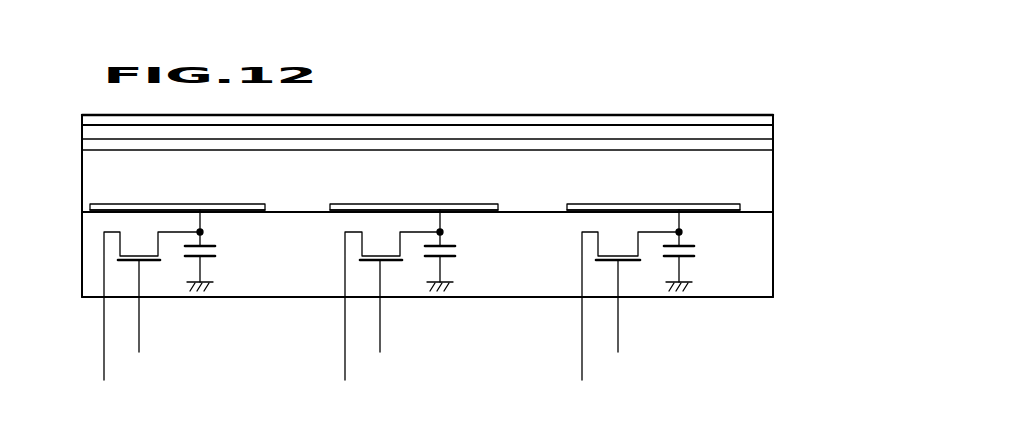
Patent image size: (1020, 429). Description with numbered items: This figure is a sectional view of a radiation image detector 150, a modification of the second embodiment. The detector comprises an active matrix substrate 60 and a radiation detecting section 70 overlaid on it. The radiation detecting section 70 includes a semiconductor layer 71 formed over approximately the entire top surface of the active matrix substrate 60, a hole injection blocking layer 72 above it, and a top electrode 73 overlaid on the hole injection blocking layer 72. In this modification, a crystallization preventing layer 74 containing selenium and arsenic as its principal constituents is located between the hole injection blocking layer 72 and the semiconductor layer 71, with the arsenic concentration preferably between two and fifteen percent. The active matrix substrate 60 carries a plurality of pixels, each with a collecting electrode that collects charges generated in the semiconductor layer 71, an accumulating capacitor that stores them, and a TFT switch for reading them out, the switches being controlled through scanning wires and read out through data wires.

The radiation image detector 150 is at (727, 56).
The radiation detecting section 70 is at (778, 115).
The active matrix substrate 60 is at (778, 215).
The top electrode 73 is at (88, 121).
The hole injection blocking layer 72 is at (87, 132).
The crystallization preventing layer 74 is at (88, 145).
The semiconductor layer 71 is at (90, 177).